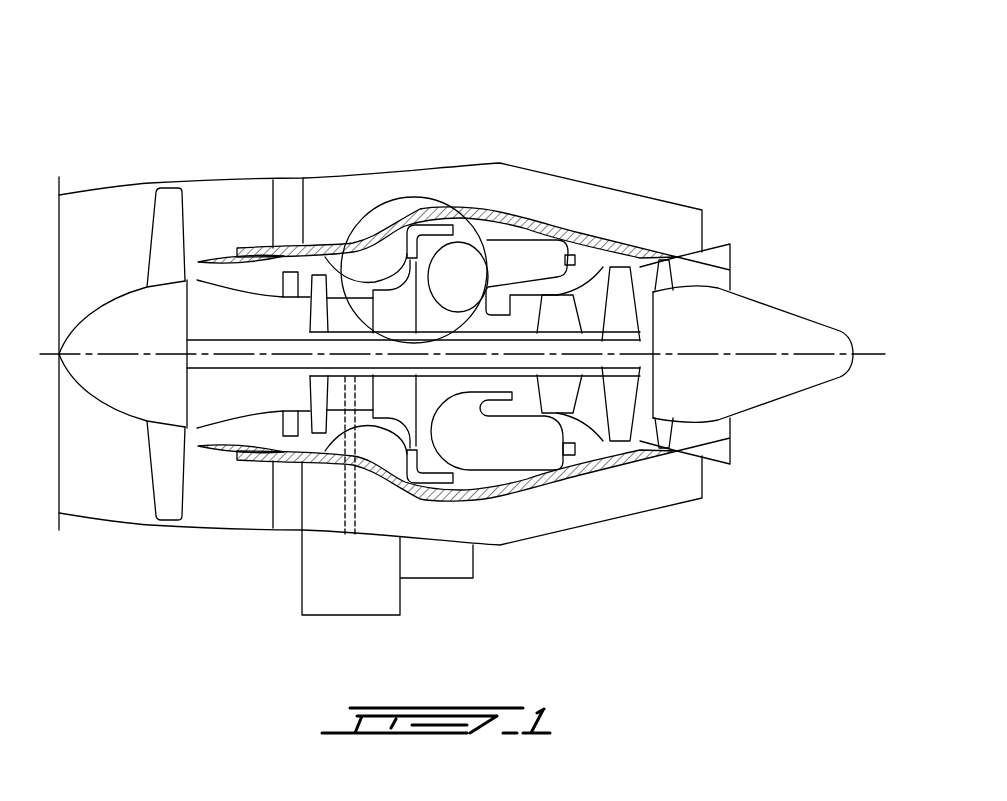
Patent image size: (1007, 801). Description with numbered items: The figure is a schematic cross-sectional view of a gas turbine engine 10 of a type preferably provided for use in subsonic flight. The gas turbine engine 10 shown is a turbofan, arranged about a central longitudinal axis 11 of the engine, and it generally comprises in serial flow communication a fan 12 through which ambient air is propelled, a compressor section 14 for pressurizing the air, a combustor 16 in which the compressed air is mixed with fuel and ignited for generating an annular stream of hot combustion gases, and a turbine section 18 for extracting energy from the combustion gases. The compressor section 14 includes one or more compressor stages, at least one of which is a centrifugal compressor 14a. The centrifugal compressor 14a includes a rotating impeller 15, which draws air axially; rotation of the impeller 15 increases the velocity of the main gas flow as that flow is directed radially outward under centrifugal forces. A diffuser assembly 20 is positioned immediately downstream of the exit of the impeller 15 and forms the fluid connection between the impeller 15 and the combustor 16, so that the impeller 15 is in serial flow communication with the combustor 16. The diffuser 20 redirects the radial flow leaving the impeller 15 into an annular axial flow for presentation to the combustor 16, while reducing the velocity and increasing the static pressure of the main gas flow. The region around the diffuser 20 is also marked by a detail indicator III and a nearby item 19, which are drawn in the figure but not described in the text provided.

The gas turbine engine 10 is at (608, 114).
The central longitudinal axis 11 is at (880, 354).
The fan 12 is at (165, 463).
The compressor section 14 is at (348, 281).
The centrifugal compressor 14a is at (380, 432).
The impeller 15 is at (403, 427).
The combustor 16 is at (496, 253).
The turbine section 18 is at (590, 402).
The upper duct channel 19 is at (405, 252).
The diffuser assembly 20 is at (435, 485).
The detail view indicator III is at (414, 197).